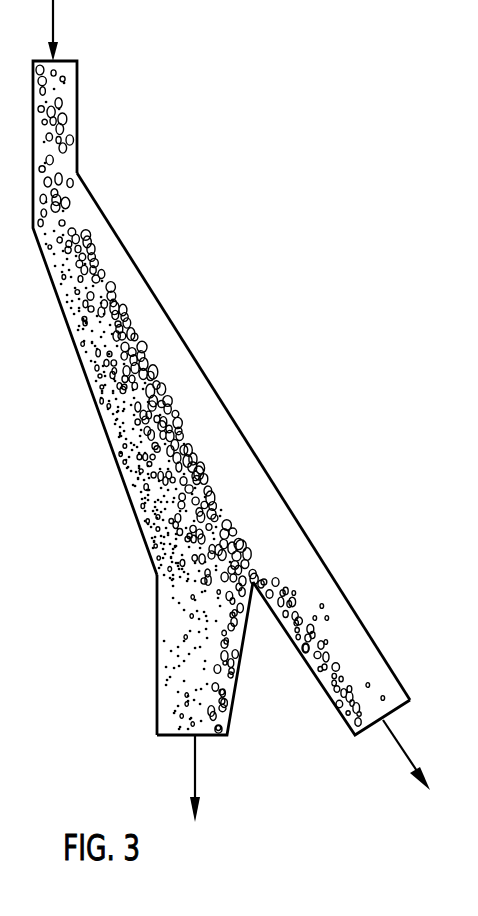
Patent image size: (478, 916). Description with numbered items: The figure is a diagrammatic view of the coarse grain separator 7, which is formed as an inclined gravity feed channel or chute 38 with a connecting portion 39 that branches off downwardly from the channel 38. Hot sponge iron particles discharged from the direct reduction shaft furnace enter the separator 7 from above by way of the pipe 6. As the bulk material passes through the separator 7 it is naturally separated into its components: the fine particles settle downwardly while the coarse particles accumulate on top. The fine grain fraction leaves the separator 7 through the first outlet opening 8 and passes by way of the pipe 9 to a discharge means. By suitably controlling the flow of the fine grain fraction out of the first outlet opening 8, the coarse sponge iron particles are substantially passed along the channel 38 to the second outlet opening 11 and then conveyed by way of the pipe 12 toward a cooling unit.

The pipe 6 is at (55, 20).
The coarse grain separator 7 is at (194, 287).
The first outlet opening 8 is at (230, 737).
The pipe 9 is at (200, 797).
The second outlet opening 11 is at (410, 692).
The pipe 12 is at (410, 757).
The inclined gravity feed channel 38 is at (232, 418).
The connecting portion 39 is at (157, 598).